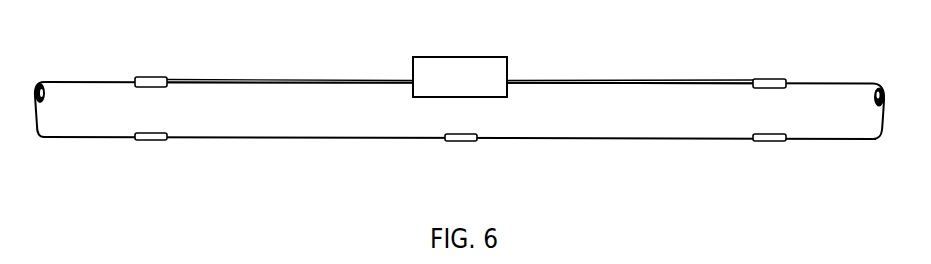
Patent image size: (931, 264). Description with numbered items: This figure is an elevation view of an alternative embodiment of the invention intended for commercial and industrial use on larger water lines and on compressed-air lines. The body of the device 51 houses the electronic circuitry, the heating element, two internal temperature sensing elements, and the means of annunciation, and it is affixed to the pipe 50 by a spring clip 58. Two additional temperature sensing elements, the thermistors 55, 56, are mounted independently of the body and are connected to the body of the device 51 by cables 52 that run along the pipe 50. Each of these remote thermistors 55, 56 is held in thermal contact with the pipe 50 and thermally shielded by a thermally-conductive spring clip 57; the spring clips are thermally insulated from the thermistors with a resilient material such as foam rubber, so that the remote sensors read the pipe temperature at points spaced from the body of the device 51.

The pipe 50 is at (93, 90).
The body of the device 51 is at (454, 57).
The cables 52 is at (263, 78).
The thermistor 55 is at (155, 76).
The thermistor 56 is at (767, 78).
The thermally-conductive spring clip 57 is at (152, 142).
The spring clip 58 is at (459, 143).